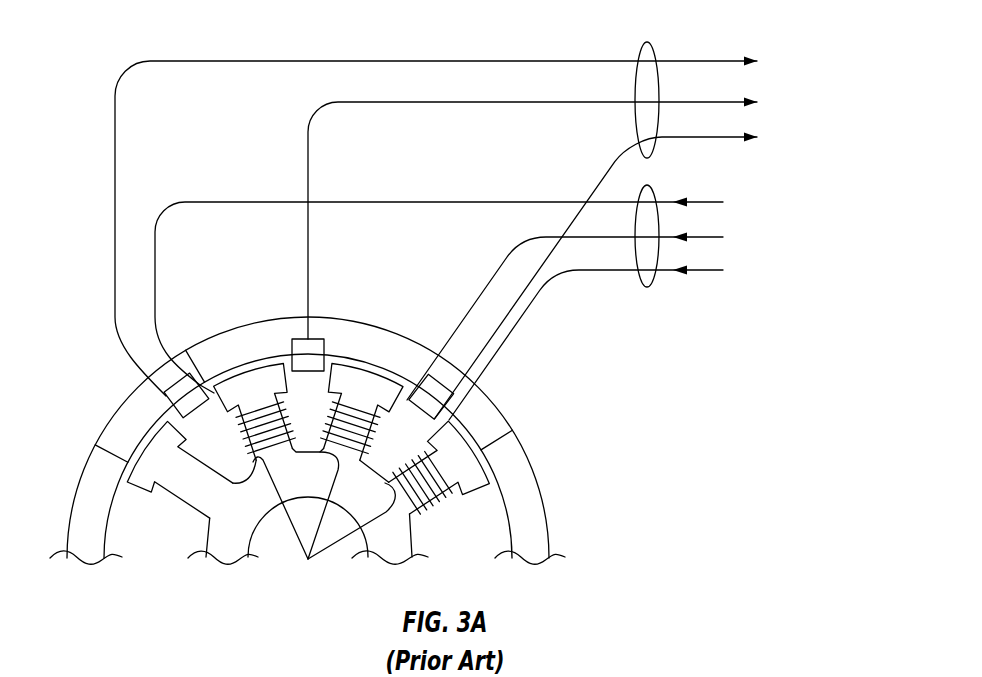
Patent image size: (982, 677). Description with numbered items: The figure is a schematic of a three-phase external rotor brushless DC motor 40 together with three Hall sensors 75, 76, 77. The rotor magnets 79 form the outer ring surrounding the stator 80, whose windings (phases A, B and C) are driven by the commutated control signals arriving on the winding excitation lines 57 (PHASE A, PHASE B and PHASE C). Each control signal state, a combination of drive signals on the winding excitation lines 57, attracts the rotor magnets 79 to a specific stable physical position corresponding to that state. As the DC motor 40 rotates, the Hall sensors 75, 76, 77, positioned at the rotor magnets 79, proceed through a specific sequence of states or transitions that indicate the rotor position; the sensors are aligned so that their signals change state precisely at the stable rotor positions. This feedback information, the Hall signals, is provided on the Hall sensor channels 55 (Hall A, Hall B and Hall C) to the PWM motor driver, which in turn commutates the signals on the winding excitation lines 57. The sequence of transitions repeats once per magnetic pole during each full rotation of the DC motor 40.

The DC motor 40 is at (362, 428).
The Hall sensor channels 55 is at (647, 43).
The winding excitation lines 57 is at (647, 287).
The Hall sensor 75 is at (165, 396).
The Hall sensor 76 is at (312, 338).
The Hall sensor 77 is at (438, 371).
The rotor magnets 79 is at (247, 325).
The stator 80 is at (418, 537).